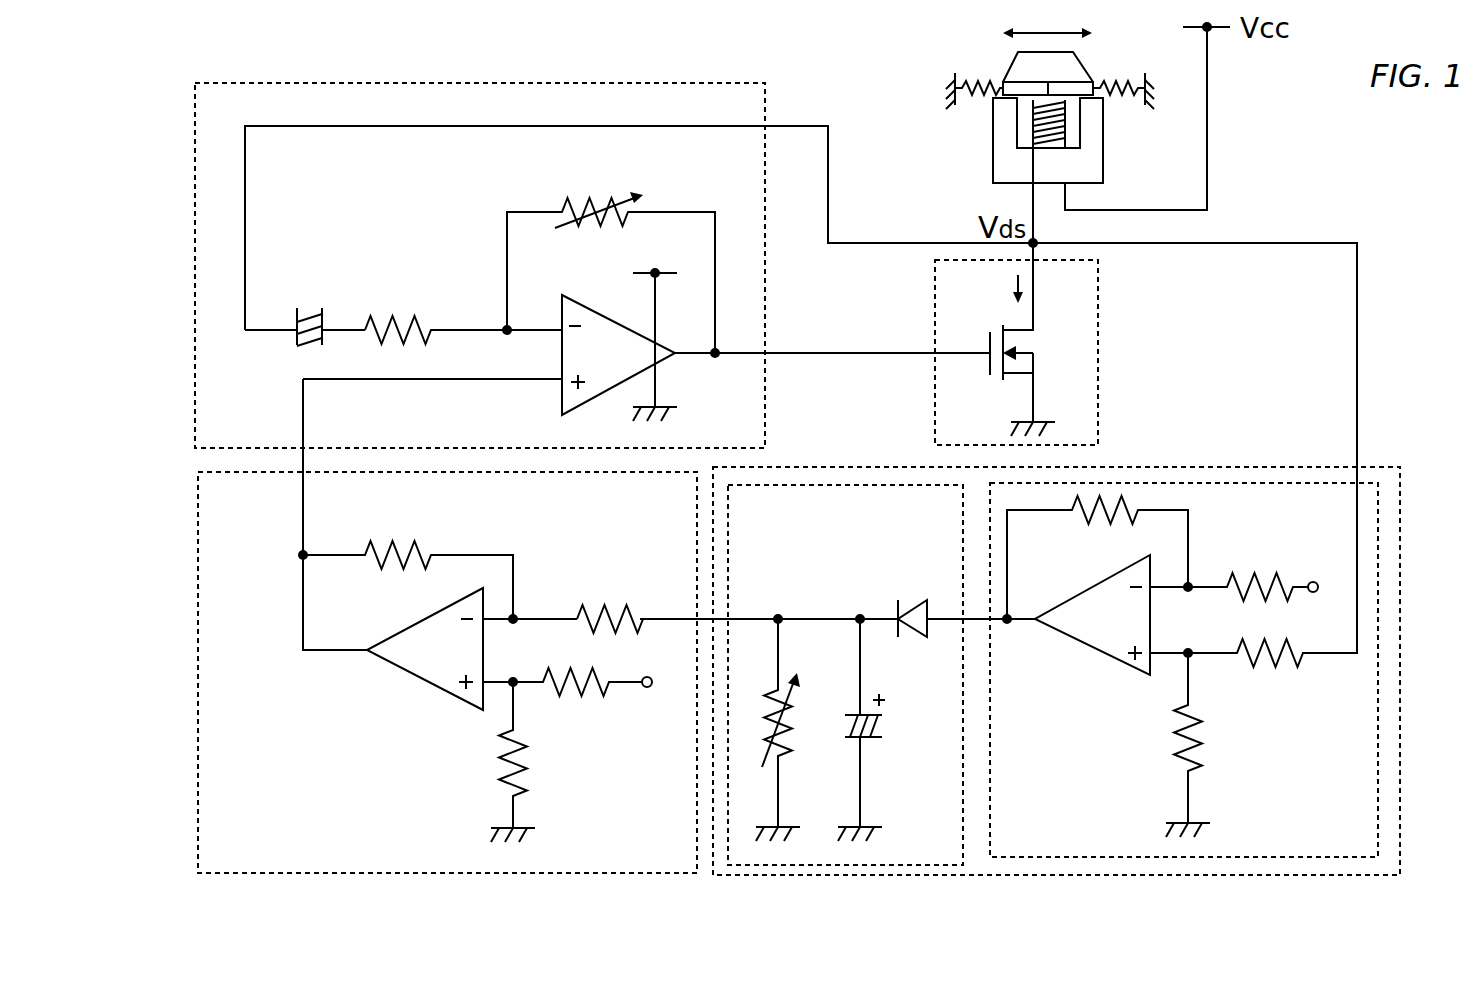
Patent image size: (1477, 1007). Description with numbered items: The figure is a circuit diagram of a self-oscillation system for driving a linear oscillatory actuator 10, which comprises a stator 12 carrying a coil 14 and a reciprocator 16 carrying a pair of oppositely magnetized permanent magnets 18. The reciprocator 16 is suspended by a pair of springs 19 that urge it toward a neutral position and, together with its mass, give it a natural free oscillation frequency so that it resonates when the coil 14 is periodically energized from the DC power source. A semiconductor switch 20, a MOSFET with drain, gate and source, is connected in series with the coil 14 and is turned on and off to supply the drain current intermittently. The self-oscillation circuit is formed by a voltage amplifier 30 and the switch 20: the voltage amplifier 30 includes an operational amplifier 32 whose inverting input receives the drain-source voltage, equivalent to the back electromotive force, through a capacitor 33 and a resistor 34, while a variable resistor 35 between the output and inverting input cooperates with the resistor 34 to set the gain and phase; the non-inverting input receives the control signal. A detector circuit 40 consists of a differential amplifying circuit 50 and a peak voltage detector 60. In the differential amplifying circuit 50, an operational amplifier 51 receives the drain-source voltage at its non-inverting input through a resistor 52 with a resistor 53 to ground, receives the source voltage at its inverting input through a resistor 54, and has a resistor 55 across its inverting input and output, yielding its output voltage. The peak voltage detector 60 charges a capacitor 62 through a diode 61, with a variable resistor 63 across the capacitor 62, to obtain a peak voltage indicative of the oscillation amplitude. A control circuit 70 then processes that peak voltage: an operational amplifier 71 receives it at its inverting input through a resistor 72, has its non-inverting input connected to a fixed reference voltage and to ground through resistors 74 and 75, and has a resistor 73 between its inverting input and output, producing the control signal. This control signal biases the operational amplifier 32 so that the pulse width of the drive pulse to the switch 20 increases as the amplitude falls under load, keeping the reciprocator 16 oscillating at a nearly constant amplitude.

The linear oscillatory actuator 10 is at (982, 40).
The stator 12 is at (995, 133).
The coil 14 is at (1070, 115).
The reciprocator 16 is at (1085, 62).
The permanent magnets 18 is at (1018, 98).
The springs 19 is at (1120, 72).
The semiconductor switch 20 is at (1049, 344).
The voltage amplifier 30 is at (194, 78).
The operational amplifier 32 is at (603, 312).
The capacitor 33 is at (310, 300).
The resistor 34 is at (404, 305).
The variable resistor 35 is at (598, 198).
The detector circuit 40 is at (1381, 458).
The differential amplifying circuit 50 is at (1184, 670).
The operational amplifier 51 is at (1076, 615).
The resistor 52 is at (1282, 675).
The resistor 53 is at (1172, 735).
The resistor 54 is at (1250, 575).
The resistor 55 is at (1098, 528).
The peak voltage detector 60 is at (845, 675).
The diode 61 is at (917, 597).
The capacitor 62 is at (885, 725).
The variable resistor 63 is at (797, 727).
The control circuit 70 is at (196, 506).
The operational amplifier 71 is at (425, 649).
The resistor 72 is at (610, 600).
The resistor 73 is at (385, 540).
The resistor 74 is at (572, 700).
The resistor 75 is at (490, 757).